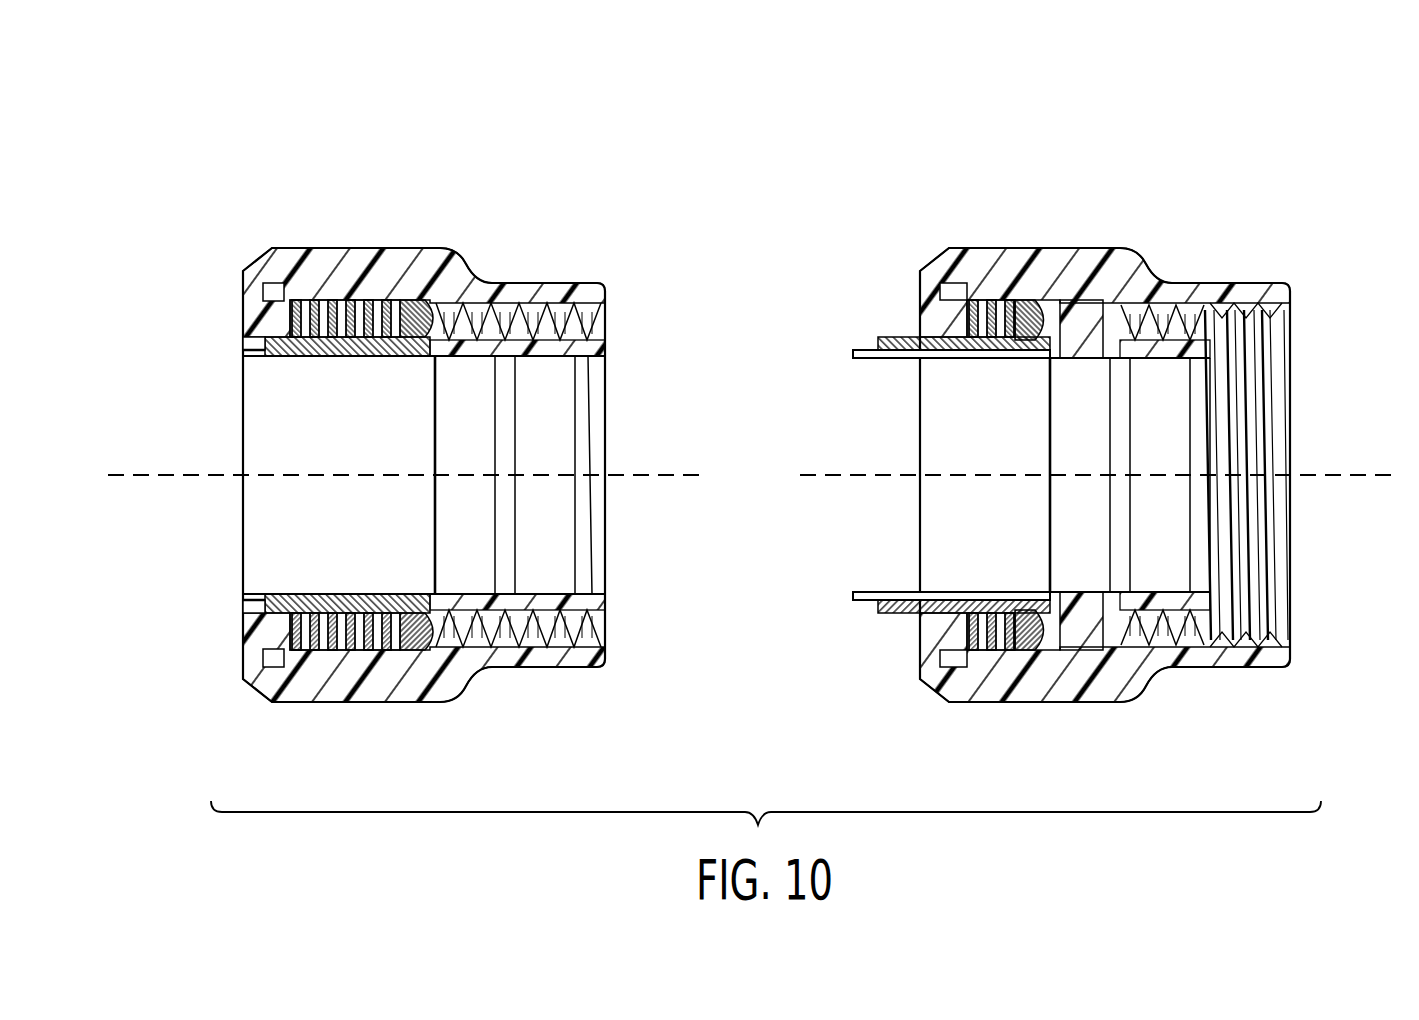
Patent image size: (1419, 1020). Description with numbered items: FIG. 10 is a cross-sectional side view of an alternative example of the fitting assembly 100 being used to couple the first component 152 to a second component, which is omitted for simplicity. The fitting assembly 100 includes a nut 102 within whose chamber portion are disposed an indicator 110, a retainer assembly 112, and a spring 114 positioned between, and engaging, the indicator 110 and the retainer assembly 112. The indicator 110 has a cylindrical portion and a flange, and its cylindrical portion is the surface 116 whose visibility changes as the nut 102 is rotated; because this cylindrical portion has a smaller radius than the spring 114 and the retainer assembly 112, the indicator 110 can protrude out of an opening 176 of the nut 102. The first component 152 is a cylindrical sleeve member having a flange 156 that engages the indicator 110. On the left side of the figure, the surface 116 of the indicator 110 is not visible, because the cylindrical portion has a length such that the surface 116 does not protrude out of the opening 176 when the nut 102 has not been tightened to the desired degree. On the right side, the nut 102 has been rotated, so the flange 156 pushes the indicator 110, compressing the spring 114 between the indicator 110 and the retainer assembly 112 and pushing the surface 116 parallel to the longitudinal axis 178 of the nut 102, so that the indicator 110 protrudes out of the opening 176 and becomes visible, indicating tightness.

The fitting assembly 100 is at (281, 154).
The nut 102 is at (540, 295).
The indicator 110 is at (412, 308).
The retainer assembly 112 is at (280, 300).
The spring 114 is at (336, 303).
The surface 116 is at (270, 325).
The first component 152 is at (553, 422).
The flange 156 is at (450, 340).
The opening 176 is at (228, 418).
The longitudinal axis 178 is at (197, 475).